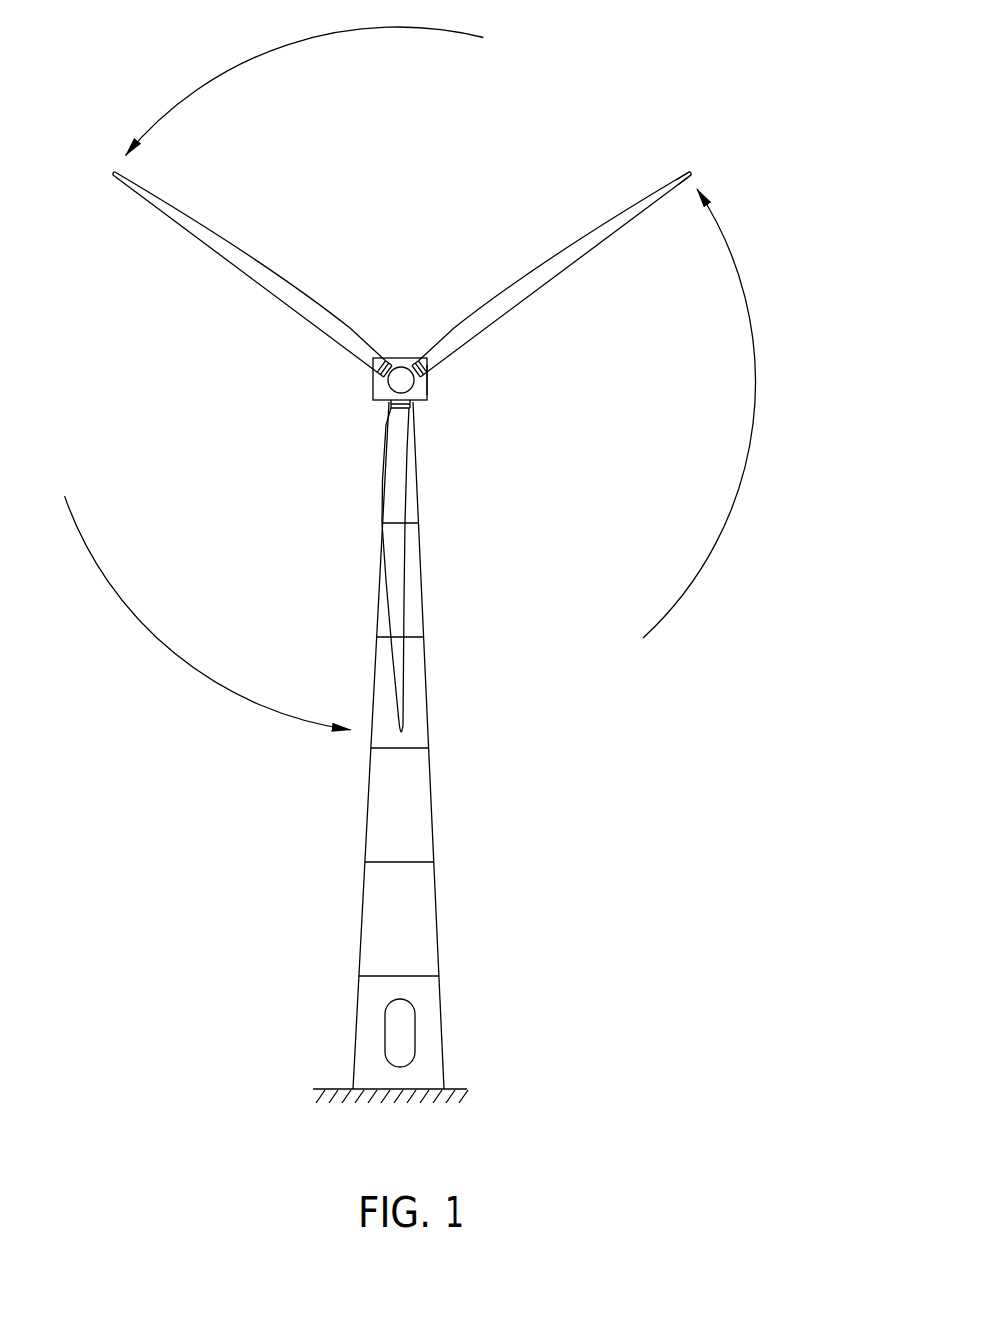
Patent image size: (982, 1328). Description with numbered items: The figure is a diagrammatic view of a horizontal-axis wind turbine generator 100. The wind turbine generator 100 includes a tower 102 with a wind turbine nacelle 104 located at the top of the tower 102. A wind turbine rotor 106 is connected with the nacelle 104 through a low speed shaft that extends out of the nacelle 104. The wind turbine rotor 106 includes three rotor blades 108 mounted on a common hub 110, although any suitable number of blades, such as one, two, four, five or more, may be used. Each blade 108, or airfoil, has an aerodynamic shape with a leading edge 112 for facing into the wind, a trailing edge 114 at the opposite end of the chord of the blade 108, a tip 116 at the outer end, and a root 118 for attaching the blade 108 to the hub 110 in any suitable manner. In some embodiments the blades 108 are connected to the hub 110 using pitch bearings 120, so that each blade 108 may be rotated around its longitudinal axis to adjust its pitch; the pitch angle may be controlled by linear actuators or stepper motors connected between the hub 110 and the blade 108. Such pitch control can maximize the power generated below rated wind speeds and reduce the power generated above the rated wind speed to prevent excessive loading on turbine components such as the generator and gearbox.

The wind turbine generator 100 is at (350, 928).
The tower 102 is at (426, 820).
The nacelle 104 is at (427, 400).
The wind turbine rotor 106 is at (459, 420).
The rotor blade 108 is at (320, 450).
The hub 110 is at (401, 380).
The leading edge 112 is at (578, 247).
The trailing edge 114 is at (572, 273).
The tip 116 is at (699, 165).
The root 118 is at (439, 377).
The pitch bearing 120 is at (420, 363).